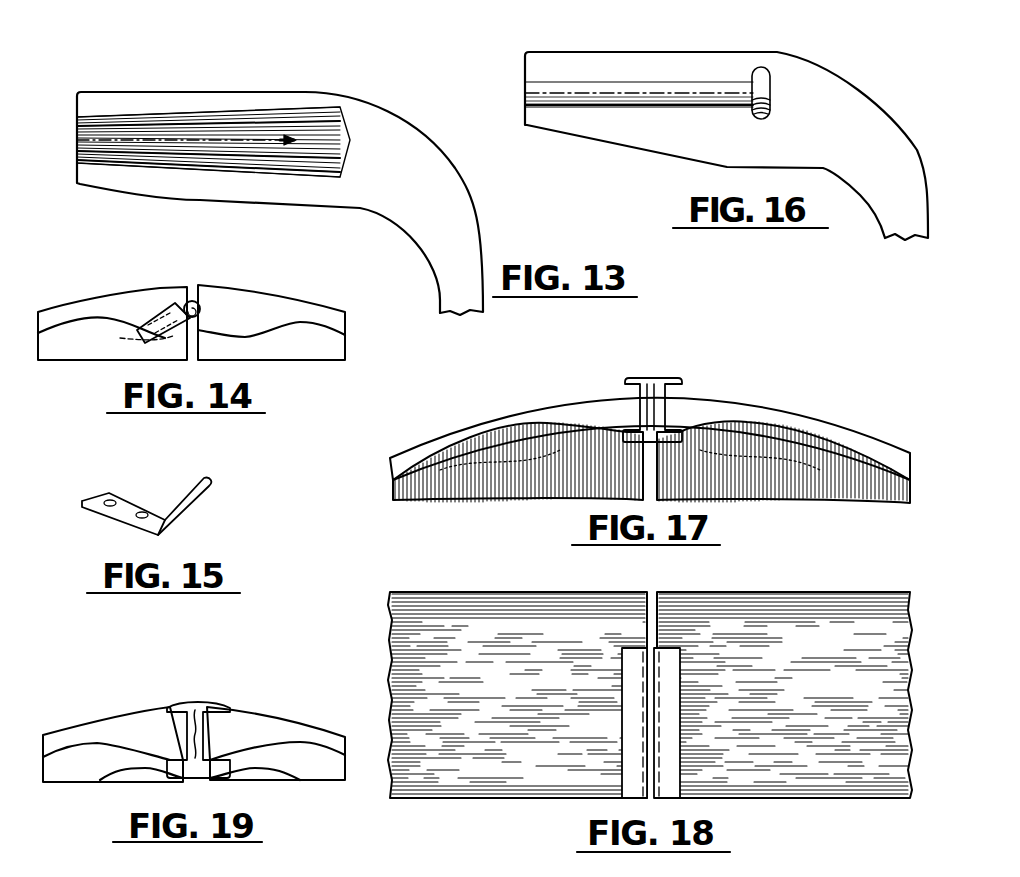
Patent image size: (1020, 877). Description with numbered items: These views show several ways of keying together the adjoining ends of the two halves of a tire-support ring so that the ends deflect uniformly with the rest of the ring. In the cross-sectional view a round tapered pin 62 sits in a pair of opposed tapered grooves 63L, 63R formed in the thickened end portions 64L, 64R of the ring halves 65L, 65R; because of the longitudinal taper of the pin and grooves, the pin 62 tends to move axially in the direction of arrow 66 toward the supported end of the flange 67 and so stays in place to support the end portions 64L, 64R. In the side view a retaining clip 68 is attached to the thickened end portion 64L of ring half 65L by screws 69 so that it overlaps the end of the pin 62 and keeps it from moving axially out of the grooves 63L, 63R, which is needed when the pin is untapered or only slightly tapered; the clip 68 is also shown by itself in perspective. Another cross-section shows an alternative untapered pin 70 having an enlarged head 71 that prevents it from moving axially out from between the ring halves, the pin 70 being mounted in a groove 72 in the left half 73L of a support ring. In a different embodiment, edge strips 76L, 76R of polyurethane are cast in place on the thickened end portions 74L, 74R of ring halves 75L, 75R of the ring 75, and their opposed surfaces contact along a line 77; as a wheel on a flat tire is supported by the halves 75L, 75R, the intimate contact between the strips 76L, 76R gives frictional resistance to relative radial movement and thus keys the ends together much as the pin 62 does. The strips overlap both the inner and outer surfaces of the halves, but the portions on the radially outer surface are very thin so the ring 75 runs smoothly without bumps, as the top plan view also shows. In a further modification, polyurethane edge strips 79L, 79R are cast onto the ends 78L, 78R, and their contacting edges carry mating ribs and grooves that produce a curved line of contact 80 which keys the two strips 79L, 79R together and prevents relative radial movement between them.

In FIG. 13, the round tapered pin 62 is at (172, 120).
In FIG. 14, the round tapered pin 62 is at (205, 333).
In FIG. 14, the tapered groove 63L is at (170, 318).
In FIG. 14, the tapered groove 63R is at (205, 315).
In FIG. 13, the thickened end portion 64L is at (226, 187).
In FIG. 14, the thickened end portion 64L is at (138, 300).
In FIG. 14, the thickened end portion 64R is at (240, 312).
In FIG. 13, the ring half 65L is at (372, 97).
In FIG. 14, the ring half 65L is at (62, 312).
In FIG. 14, the ring half 65R is at (305, 312).
In FIG. 13, the arrow 66 is at (272, 132).
In FIG. 13, the flange 67 is at (315, 92).
In FIG. 14, the retaining clip 68 is at (170, 318).
In FIG. 15, the retaining clip 68 is at (210, 487).
In FIG. 14, the screws 69 is at (148, 340).
In FIG. 16, the untapered pin 70 is at (662, 82).
In FIG. 16, the enlarged head 71 is at (760, 68).
In FIG. 16, the groove 72 is at (692, 84).
In FIG. 16, the left half of support ring 73L is at (607, 68).
In FIG. 17, the thickened end portion 74L is at (565, 405).
In FIG. 18, the thickened end portion 74L is at (620, 617).
In FIG. 17, the thickened end portion 74R is at (708, 398).
In FIG. 18, the thickened end portion 74R is at (692, 612).
In FIG. 17, the ring 75 is at (776, 394).
In FIG. 18, the ring 75 is at (772, 591).
In FIG. 17, the ring half 75L is at (478, 425).
In FIG. 18, the ring half 75L is at (435, 615).
In FIG. 17, the ring half 75R is at (822, 428).
In FIG. 18, the ring half 75R is at (858, 615).
In FIG. 17, the edge strip 76L is at (640, 435).
In FIG. 18, the edge strip 76L is at (632, 688).
In FIG. 17, the edge strip 76R is at (665, 437).
In FIG. 18, the edge strip 76R is at (670, 695).
In FIG. 17, the line of contact 77 is at (652, 376).
In FIG. 19, the end 78L is at (108, 730).
In FIG. 19, the end 78R is at (258, 730).
In FIG. 19, the edge strip 79L is at (95, 783).
In FIG. 19, the edge strip 79R is at (272, 780).
In FIG. 19, the curved line of contact 80 is at (194, 700).